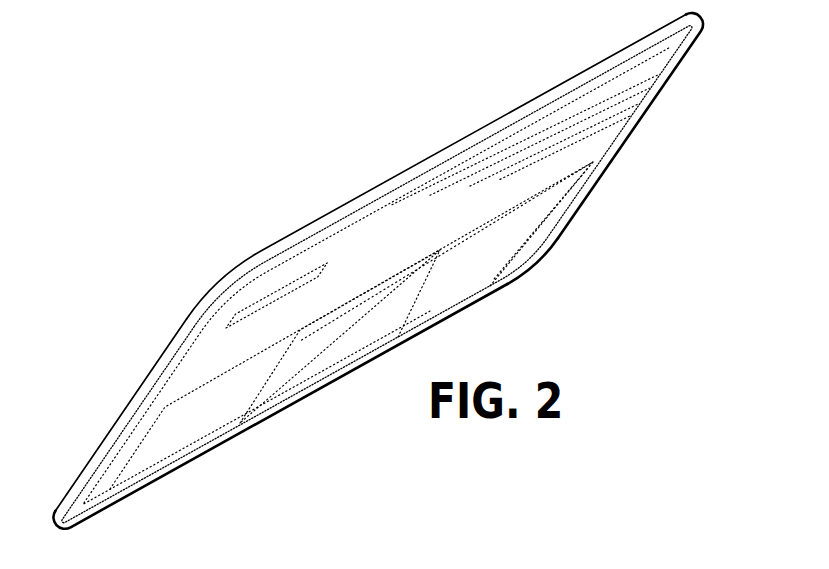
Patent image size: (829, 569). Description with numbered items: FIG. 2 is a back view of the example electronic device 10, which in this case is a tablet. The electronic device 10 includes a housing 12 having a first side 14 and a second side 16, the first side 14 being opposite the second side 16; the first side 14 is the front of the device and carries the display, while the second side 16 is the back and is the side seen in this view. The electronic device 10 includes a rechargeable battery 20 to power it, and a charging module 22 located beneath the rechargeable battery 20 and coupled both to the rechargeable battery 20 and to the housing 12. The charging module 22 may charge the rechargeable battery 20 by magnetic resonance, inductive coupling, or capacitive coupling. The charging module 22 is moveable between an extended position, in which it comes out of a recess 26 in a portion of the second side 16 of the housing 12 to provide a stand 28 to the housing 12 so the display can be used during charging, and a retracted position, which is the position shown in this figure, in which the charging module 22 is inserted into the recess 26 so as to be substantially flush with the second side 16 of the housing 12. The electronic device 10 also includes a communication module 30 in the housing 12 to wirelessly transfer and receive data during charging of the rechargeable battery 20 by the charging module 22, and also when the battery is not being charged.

The electronic device 10 is at (368, 123).
The housing 12 is at (461, 146).
The first side 14 is at (160, 363).
The second side 16 is at (612, 137).
The rechargeable battery 20 is at (543, 251).
The charging module 22 is at (416, 324).
The recess 26 is at (113, 481).
The stand 28 is at (204, 434).
The communication module 30 is at (283, 278).